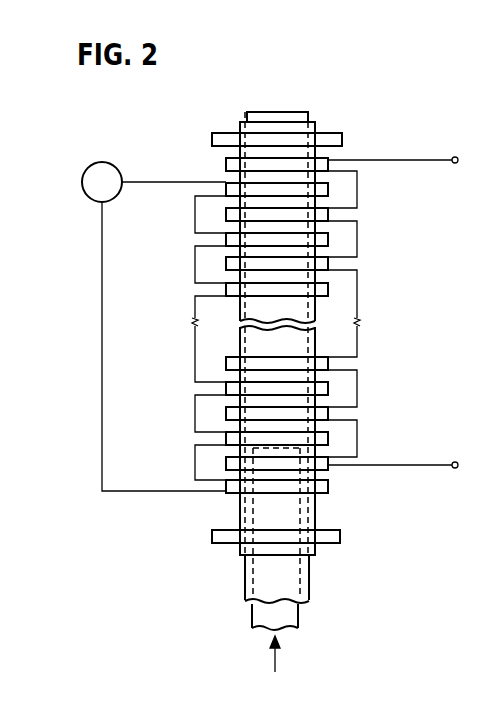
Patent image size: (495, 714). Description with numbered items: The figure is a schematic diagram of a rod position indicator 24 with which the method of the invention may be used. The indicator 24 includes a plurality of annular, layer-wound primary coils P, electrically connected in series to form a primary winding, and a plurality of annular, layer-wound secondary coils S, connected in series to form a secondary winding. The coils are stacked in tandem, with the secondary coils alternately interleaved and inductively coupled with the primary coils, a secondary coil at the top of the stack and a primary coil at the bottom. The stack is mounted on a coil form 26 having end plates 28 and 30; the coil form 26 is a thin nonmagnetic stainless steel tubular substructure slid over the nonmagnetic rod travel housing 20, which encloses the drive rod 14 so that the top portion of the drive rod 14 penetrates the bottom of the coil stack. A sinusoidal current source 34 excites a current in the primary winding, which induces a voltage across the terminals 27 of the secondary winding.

The drive rod 14 is at (291, 617).
The rod travel housing 20 is at (291, 578).
The rod position indicator 24 is at (408, 326).
The coil form 26 is at (240, 128).
The terminals 27 is at (457, 164).
The end plate 28 is at (340, 135).
The end plate 30 is at (218, 543).
The sinusoidal current source 34 is at (112, 168).